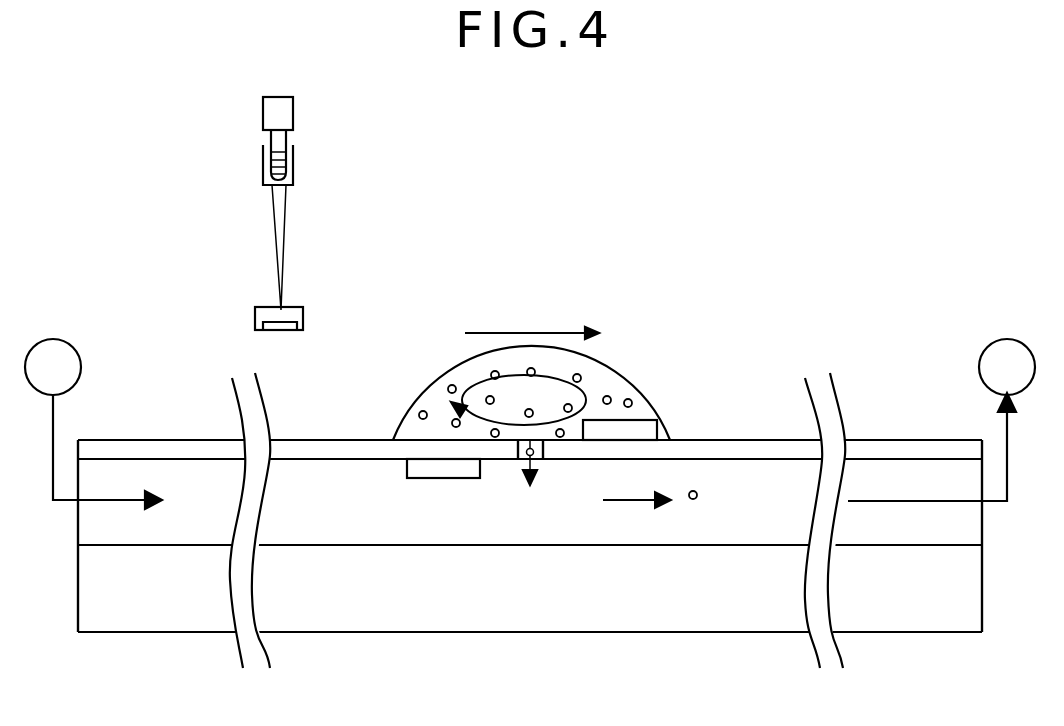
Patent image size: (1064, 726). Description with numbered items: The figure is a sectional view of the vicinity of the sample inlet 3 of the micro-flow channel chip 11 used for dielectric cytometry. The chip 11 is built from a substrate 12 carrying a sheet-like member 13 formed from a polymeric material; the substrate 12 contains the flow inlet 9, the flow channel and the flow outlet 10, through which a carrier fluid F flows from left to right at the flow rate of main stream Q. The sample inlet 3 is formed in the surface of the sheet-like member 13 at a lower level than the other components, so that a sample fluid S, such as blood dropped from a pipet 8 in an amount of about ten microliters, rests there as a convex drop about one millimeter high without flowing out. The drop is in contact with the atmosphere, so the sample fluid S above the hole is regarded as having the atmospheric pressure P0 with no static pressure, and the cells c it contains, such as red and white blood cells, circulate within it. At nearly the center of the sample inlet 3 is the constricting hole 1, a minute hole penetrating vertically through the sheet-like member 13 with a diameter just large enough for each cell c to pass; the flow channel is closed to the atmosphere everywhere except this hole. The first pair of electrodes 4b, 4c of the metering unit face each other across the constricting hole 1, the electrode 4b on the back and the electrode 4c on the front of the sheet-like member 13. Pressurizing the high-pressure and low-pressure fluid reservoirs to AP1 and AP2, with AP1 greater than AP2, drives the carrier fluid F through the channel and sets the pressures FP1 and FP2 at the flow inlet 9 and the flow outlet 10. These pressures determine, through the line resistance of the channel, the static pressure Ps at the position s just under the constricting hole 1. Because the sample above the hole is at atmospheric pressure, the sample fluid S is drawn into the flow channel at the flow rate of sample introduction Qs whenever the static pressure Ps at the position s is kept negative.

The constricting hole 1 is at (543, 457).
The sample inlet 3 is at (742, 371).
The electrode 4b is at (427, 467).
The electrode 4c is at (660, 428).
The pipet 8 is at (295, 164).
The flow inlet 9 is at (78, 522).
The flow outlet 10 is at (983, 523).
The micro-flow channel chip 11 is at (278, 331).
The substrate 12 is at (647, 626).
The sheet-like member 13 is at (777, 446).
The sample fluid S is at (600, 361).
The cells c is at (452, 385).
The carrier fluid F is at (331, 488).
The flow rate of main stream Q is at (637, 512).
The flow rate of sample introduction Qs is at (499, 487).
The position just under the constricting hole s is at (531, 495).
The static pressure Ps is at (534, 520).
The atmospheric pressure P0 is at (660, 367).
The pressure at the flow inlet FP1 is at (111, 489).
The pressure at the flow outlet FP2 is at (950, 487).
The pressure of the high-pressure fluid reservoir AP1 is at (93, 424).
The pressure of the low-pressure fluid reservoir AP2 is at (941, 420).